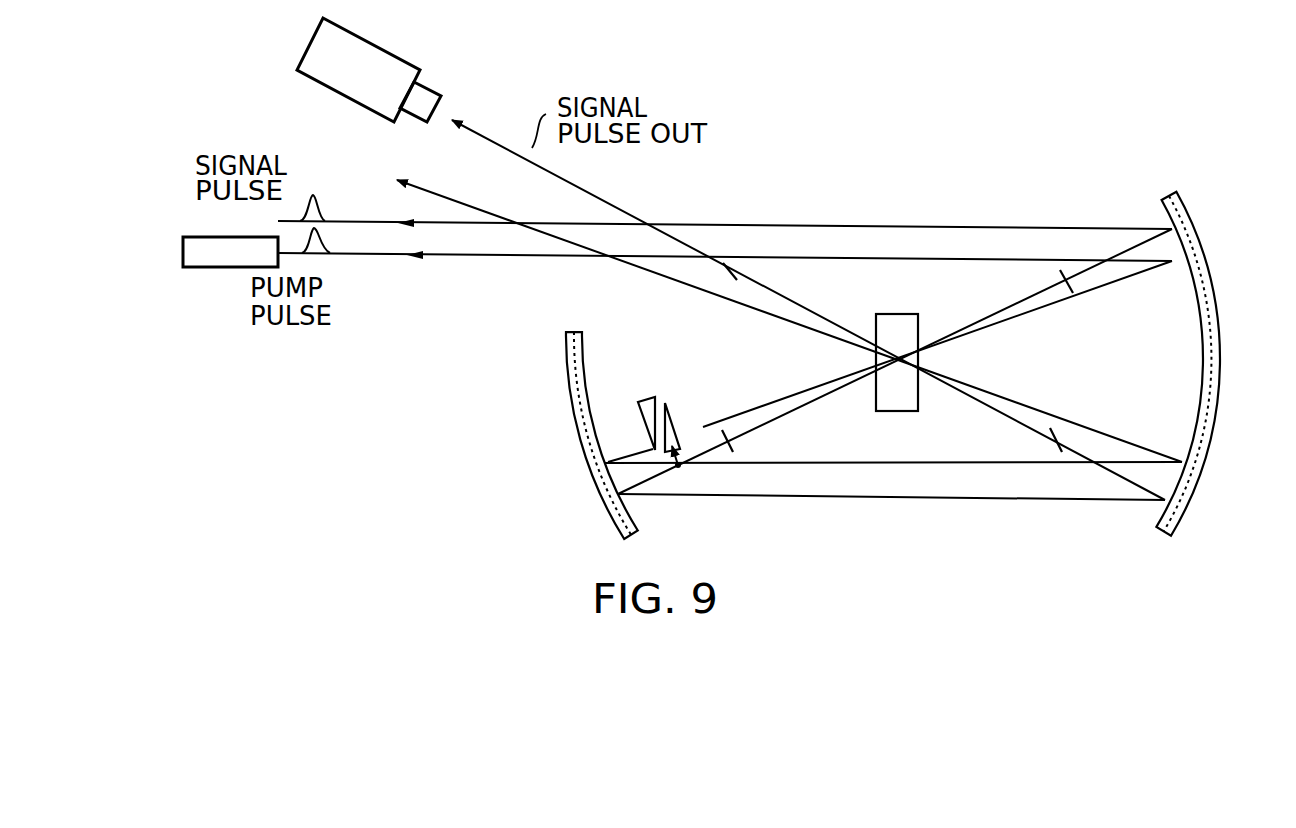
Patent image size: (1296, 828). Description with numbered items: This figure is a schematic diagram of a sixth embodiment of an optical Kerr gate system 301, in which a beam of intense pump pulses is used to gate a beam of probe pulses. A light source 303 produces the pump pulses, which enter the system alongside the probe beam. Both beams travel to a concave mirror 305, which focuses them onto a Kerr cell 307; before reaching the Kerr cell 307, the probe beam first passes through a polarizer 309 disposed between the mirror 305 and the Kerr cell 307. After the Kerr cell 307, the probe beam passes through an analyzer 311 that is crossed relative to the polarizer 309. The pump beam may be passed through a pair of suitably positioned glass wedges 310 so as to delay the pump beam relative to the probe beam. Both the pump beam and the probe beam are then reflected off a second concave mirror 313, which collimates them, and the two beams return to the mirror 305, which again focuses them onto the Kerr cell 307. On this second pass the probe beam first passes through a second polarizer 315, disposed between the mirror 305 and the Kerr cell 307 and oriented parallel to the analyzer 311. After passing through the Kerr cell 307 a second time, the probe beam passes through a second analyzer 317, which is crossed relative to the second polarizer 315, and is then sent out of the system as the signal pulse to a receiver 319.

The optical Kerr gate system 301 is at (946, 152).
The light source 303 is at (204, 257).
The concave mirror 305 is at (1198, 236).
The Kerr cell 307 is at (908, 320).
The polarizer 309 is at (1061, 272).
The pair of glass wedges 310 is at (709, 365).
The analyzer 311 is at (735, 453).
The second concave mirror 313 is at (601, 498).
The second polarizer 315 is at (1052, 428).
The second analyzer 317 is at (745, 277).
The receiver 319 is at (390, 73).